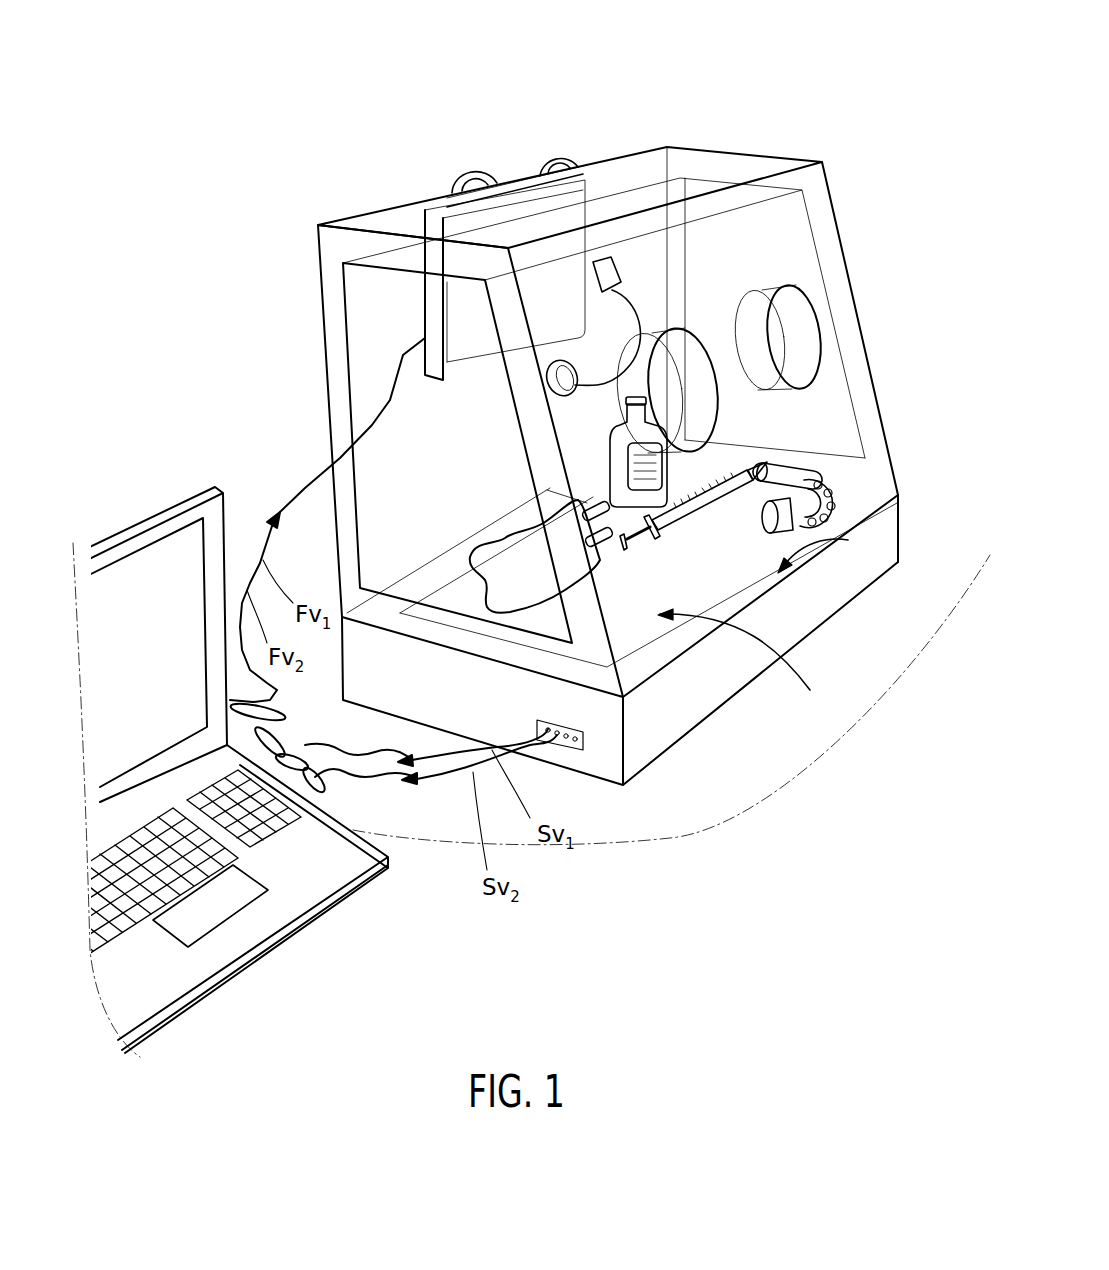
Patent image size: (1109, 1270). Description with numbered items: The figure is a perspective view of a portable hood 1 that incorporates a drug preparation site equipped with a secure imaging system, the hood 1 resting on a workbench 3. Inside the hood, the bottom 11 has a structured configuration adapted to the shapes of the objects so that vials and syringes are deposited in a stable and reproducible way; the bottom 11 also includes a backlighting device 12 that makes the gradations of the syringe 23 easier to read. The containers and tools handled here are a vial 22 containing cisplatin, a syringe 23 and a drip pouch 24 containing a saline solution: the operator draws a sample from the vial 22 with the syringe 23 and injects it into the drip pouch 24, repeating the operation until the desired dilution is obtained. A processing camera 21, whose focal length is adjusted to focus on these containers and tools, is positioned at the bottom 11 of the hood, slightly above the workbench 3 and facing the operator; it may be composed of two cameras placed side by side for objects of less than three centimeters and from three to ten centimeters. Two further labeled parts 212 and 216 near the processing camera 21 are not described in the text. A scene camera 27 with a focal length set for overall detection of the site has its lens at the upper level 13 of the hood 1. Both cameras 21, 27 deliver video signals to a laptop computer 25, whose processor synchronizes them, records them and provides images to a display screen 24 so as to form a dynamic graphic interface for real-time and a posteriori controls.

The portable hood 1 is at (770, 135).
The workbench 3 is at (735, 765).
The bottom of the hood 11 is at (848, 540).
The backlighting device 12 is at (748, 658).
The upper level of the hood 13 is at (817, 197).
The processing camera 21 is at (820, 468).
The cylinder 212 is at (830, 480).
The ring 216 is at (838, 490).
The vial 22 is at (607, 467).
The syringe 23 is at (708, 470).
The drip pouch 24 is at (452, 218).
The laptop computer 25 is at (258, 953).
The scene camera 27 is at (632, 288).